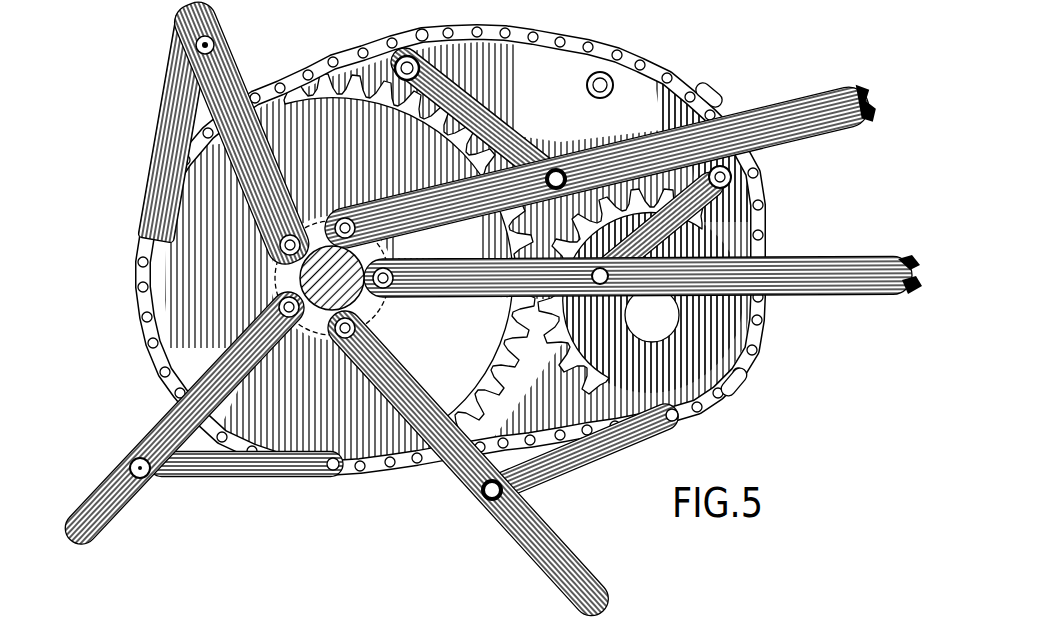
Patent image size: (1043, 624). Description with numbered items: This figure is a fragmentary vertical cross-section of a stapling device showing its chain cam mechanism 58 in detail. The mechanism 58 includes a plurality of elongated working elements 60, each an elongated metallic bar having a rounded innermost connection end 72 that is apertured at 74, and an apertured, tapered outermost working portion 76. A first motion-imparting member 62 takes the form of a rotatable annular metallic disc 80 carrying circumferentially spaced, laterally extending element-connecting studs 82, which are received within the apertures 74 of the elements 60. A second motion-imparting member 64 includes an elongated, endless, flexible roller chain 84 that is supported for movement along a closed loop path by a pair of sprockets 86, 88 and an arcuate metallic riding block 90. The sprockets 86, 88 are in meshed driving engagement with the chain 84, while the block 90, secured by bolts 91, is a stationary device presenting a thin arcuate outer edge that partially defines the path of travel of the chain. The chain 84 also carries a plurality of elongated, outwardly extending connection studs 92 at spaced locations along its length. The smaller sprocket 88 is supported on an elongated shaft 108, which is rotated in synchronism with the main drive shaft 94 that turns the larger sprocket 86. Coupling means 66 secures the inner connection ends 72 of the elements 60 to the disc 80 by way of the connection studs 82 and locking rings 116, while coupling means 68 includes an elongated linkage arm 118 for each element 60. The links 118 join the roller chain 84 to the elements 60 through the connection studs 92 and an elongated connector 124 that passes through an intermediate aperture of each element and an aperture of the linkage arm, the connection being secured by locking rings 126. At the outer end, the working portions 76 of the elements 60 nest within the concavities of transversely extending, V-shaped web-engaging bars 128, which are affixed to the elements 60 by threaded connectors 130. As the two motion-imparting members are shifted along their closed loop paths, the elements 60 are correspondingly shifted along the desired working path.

The chain cam mechanism 58 is at (776, 94).
The working element 60 is at (488, 533).
The first motion-imparting member 62 is at (330, 205).
The second motion-imparting member 64 is at (266, 70).
The coupling means 66 is at (334, 372).
The coupling means 68 is at (653, 247).
The innermost connection end 72 is at (386, 303).
The aperture 74 is at (398, 240).
The outermost working portion 76 is at (870, 290).
The annular metallic disc 80 is at (270, 282).
The element-connecting stud 82 is at (278, 246).
The roller chain 84 is at (687, 82).
The sprocket 86 is at (438, 384).
The sprocket 88 is at (735, 394).
The arcuate metallic riding block 90 is at (702, 94).
The bolt 91 is at (395, 32).
The connection stud 92 is at (673, 422).
The main drive shaft 94 is at (320, 338).
The shaft 108 is at (645, 325).
The locking ring 116 is at (398, 282).
The linkage arm 118 is at (492, 107).
The connector 124 is at (504, 497).
The locking ring 126 is at (562, 170).
The web-engaging bar 128 is at (914, 288).
The threaded connector 130 is at (908, 266).